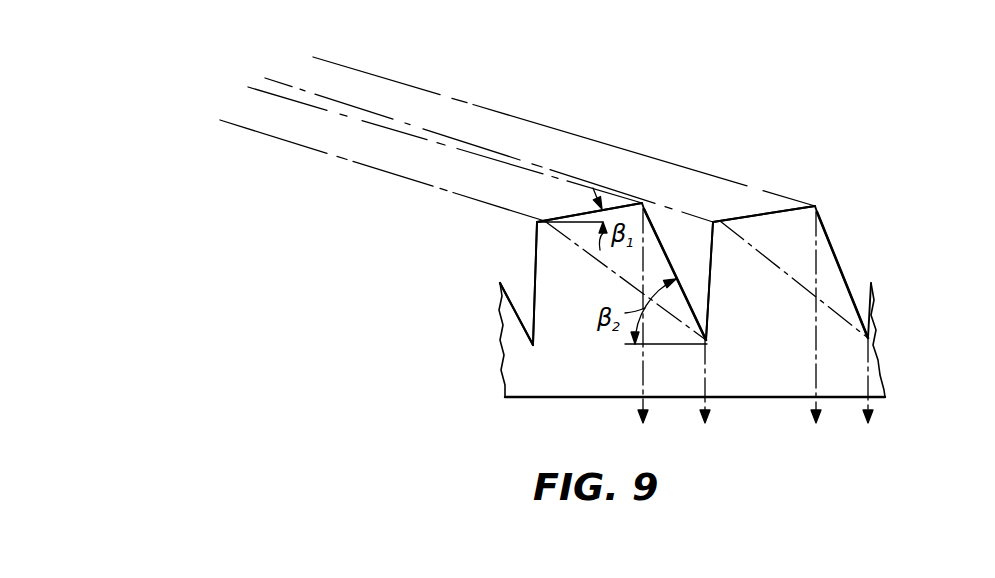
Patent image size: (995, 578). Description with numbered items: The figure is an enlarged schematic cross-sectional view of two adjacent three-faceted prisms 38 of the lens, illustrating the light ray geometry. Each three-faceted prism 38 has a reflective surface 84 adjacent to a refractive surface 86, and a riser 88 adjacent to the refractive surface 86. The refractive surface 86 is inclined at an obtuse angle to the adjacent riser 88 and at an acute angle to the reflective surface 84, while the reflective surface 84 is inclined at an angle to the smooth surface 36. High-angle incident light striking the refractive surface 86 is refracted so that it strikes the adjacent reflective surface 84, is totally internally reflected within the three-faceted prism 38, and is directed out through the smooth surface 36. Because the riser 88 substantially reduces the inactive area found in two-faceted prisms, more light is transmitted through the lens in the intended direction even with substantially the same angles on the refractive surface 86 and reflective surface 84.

The smooth surface 36 is at (580, 399).
The three-faceted prism 38 is at (582, 299).
The reflective surface 84 is at (655, 231).
The refractive surface 86 is at (567, 215).
The riser 88 is at (535, 247).